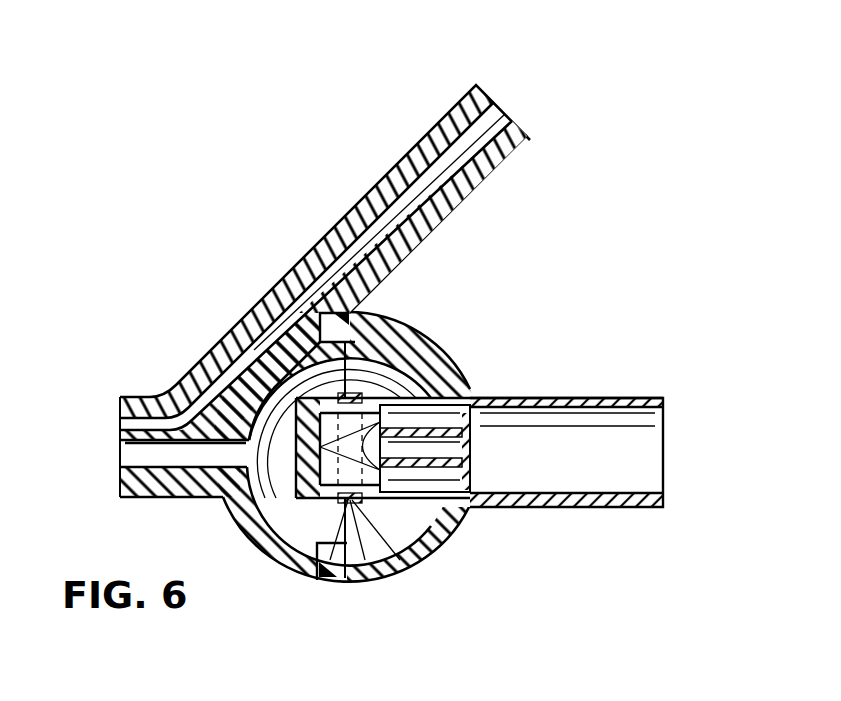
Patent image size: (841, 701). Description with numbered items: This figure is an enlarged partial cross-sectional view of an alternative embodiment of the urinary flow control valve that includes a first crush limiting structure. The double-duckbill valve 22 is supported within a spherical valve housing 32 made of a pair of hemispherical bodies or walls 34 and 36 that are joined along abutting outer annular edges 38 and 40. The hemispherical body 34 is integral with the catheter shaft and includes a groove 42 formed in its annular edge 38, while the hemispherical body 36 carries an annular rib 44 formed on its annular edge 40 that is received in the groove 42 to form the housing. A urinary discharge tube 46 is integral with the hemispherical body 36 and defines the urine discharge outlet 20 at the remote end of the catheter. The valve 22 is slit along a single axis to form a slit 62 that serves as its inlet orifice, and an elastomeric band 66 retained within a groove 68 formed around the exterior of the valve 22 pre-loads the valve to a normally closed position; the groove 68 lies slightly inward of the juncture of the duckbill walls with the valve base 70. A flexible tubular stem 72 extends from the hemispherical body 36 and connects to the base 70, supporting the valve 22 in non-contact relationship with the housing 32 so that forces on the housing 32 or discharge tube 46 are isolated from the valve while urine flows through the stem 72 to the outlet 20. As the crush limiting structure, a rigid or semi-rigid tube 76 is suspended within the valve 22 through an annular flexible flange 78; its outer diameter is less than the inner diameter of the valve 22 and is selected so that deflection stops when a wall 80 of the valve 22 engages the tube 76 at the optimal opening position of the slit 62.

The urine discharge outlet 20 is at (660, 443).
The double-duckbill valve 22 is at (408, 352).
The spherical valve housing 32 is at (265, 568).
The hemispherical body 34 is at (241, 528).
The hemispherical body 36 is at (458, 538).
The annular edge 38 is at (388, 394).
The annular edge 40 is at (345, 318).
The groove 42 is at (342, 556).
The annular rib 44 is at (323, 584).
The urinary discharge tube 46 is at (574, 397).
The slit 62 is at (291, 478).
The elastomeric band 66 is at (350, 500).
The groove 68 is at (352, 500).
The valve base 70 is at (345, 380).
The tubular stem 72 is at (465, 507).
The tube 76 is at (462, 452).
The annular flexible flange 78 is at (474, 418).
The wall 80 is at (366, 497).